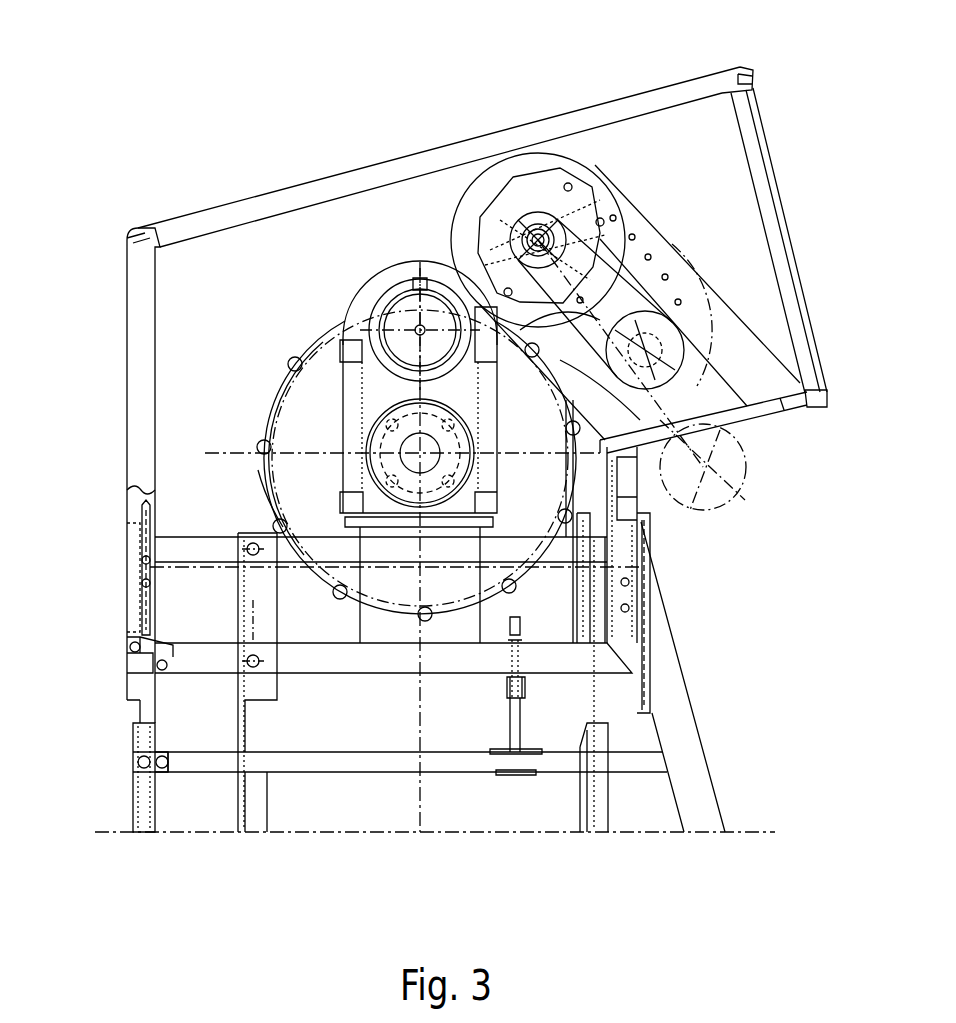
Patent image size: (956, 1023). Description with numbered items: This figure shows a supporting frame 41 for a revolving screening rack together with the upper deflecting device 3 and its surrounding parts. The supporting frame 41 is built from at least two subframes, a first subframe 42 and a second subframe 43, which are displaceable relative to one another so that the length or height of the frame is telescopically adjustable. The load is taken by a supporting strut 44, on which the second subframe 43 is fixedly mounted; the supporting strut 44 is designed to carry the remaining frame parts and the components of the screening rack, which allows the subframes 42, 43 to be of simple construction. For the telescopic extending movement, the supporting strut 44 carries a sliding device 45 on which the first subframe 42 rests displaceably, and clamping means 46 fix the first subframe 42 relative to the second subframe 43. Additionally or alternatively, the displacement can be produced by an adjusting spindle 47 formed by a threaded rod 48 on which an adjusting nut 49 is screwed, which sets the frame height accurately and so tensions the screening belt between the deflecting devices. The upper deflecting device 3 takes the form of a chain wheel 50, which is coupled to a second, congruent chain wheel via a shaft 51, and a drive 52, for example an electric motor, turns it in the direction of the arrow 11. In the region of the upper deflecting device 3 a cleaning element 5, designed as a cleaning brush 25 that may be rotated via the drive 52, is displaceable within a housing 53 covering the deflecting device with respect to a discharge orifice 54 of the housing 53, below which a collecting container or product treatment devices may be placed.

The upper deflecting device 3 is at (317, 397).
The cleaning element 5 is at (632, 193).
The arrow 11 is at (296, 416).
The cleaning brush 25 is at (538, 160).
The supporting frame 41 is at (721, 682).
The first subframe 42 is at (135, 510).
The second subframe 43 is at (145, 815).
The supporting strut 44 is at (693, 768).
The sliding device 45 is at (119, 566).
The clamping means 46 is at (142, 585).
The adjusting spindle 47 is at (505, 712).
The threaded rod 48 is at (520, 722).
The adjusting nut 49 is at (527, 685).
The chain wheel 50 is at (270, 405).
The shaft 51 is at (440, 462).
The drive 52 is at (386, 262).
The housing 53 is at (462, 150).
The discharge orifice 54 is at (767, 412).